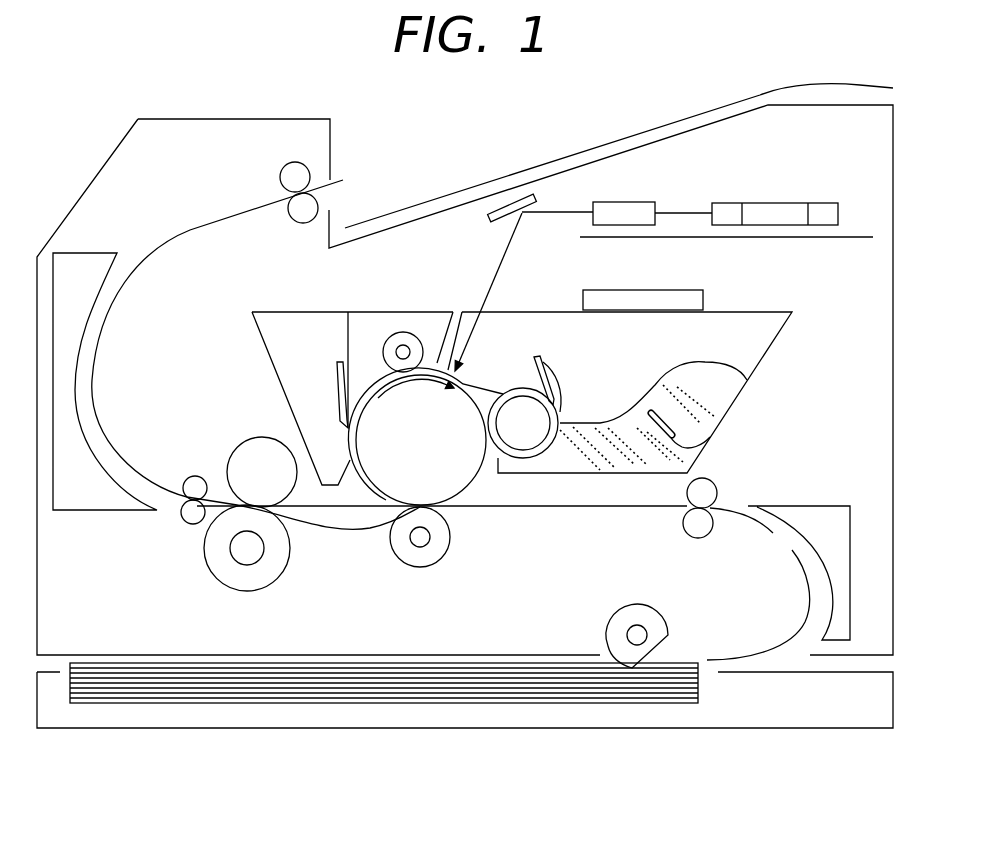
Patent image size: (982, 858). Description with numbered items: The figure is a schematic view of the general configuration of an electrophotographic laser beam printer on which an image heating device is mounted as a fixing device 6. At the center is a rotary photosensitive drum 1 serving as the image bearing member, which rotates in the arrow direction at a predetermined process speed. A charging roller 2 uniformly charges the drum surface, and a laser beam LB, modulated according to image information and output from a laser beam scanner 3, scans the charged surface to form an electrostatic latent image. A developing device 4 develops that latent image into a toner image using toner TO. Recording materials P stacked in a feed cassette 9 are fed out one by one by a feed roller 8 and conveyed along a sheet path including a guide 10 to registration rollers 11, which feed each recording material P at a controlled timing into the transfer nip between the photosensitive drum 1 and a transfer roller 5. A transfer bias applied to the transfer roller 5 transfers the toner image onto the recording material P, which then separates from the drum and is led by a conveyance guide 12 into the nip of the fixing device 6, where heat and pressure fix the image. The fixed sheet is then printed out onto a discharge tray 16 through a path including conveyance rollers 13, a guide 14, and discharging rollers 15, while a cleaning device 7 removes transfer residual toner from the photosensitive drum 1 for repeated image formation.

The photosensitive drum 1 is at (472, 480).
The charging roller 2 is at (398, 333).
The laser beam scanner 3 is at (648, 201).
The developing device 4 is at (538, 465).
The transfer roller 5 is at (433, 566).
The fixing device 6 is at (227, 462).
The cleaning device 7 is at (283, 392).
The feed roller 8 is at (628, 605).
The feed cassette 9 is at (318, 662).
The guide 10 is at (792, 507).
The registration rollers 11 is at (705, 538).
The conveyance guide 12 is at (345, 532).
The conveyance rollers 13 is at (190, 526).
The guide 14 is at (92, 253).
The discharging rollers 15 is at (280, 177).
The discharge tray 16 is at (478, 198).
The laser beam LB is at (478, 305).
The toner TO is at (600, 423).
The recording material P is at (541, 662).